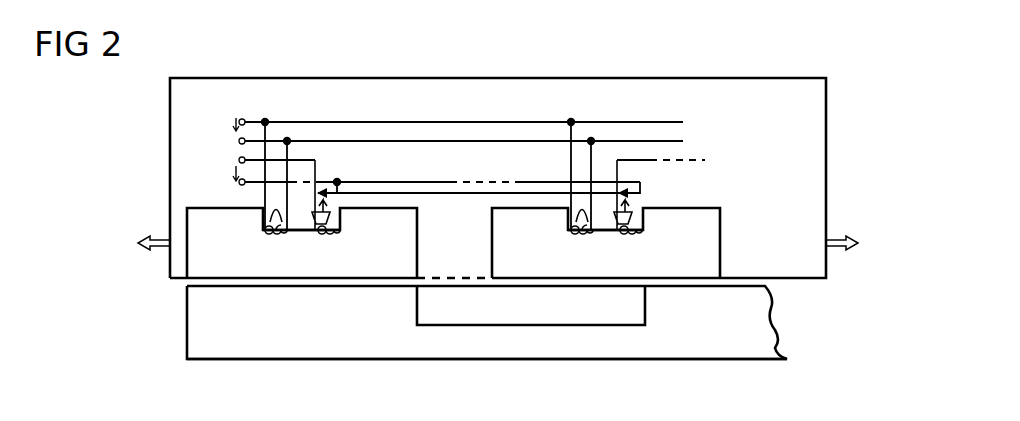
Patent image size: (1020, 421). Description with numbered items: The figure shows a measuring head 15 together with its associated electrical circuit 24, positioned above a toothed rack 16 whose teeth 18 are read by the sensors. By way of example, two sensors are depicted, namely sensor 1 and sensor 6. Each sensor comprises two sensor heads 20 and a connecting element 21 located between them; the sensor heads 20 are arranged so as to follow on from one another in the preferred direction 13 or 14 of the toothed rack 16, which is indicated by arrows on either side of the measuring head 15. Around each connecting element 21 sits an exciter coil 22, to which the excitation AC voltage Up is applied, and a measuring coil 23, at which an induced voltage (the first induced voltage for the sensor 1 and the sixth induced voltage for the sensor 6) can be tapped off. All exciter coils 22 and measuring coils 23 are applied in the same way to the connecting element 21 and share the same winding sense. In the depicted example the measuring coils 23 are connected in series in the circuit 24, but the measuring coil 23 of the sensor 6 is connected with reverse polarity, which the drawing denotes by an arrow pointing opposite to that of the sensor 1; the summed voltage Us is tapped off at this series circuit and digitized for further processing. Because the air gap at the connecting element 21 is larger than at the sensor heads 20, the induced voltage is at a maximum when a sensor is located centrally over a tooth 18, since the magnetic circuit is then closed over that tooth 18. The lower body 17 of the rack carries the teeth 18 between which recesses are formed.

The sensor 1 is at (428, 207).
The sensor 6 is at (718, 199).
The preferred direction 13 is at (845, 234).
The preferred direction 14 is at (158, 235).
The measuring head 15 is at (826, 133).
The toothed rack 16 is at (768, 322).
The base of secondary part 17 is at (538, 326).
The tooth 18 is at (418, 312).
The sensor head 20 is at (198, 208).
The connecting element 21 is at (303, 232).
The exciter coil 22 is at (263, 220).
The measuring coil 23 is at (337, 237).
The electrical circuit 24 is at (484, 152).